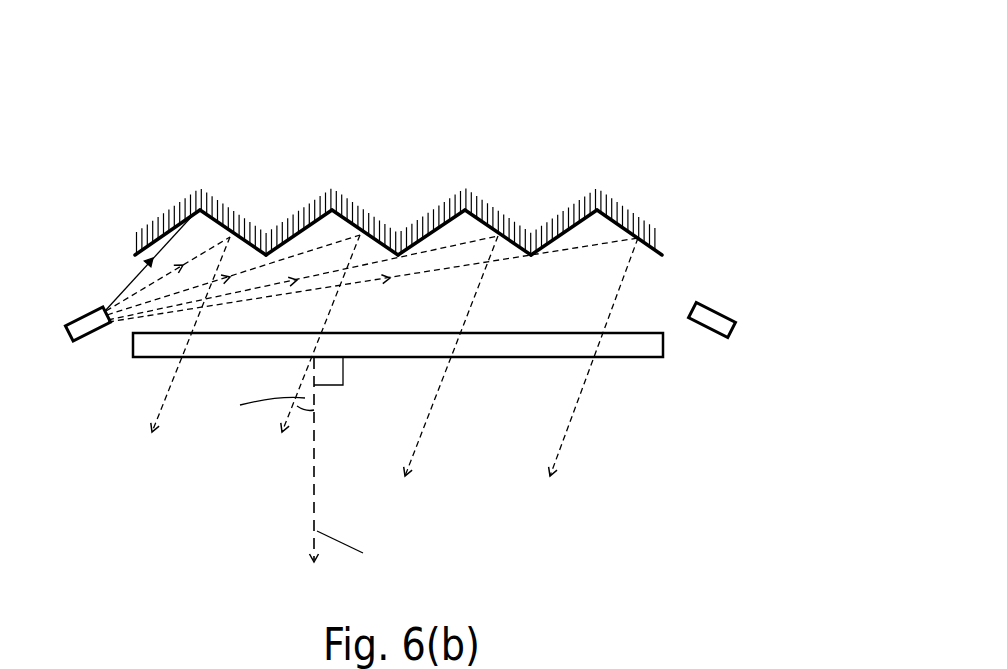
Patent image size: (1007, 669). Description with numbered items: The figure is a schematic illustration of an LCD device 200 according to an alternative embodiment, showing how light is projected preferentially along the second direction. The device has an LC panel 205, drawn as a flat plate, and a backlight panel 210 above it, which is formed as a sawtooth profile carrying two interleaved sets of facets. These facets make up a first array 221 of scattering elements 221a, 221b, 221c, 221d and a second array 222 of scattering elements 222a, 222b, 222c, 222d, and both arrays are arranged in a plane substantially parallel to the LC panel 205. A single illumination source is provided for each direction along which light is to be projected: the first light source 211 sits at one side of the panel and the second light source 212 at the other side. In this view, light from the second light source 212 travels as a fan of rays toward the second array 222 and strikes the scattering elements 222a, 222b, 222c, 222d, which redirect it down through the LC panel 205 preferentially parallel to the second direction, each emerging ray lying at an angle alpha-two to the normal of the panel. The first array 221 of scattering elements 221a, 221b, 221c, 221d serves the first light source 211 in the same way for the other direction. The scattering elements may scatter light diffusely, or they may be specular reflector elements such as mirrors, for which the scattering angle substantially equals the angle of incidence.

The LCD device 200 is at (667, 86).
The LC panel 205 is at (667, 343).
The backlight panel 210 is at (688, 221).
The first light source 211 is at (712, 320).
The second light source 212 is at (80, 321).
The first array of scattering elements 221 is at (141, 174).
The scattering element 221a is at (157, 240).
The scattering element 221b is at (312, 226).
The scattering element 221c is at (447, 222).
The scattering element 221d is at (580, 222).
The second array of scattering elements 222 is at (244, 174).
The scattering element 222a is at (215, 205).
The scattering element 222b is at (355, 226).
The scattering element 222c is at (493, 224).
The scattering element 222d is at (633, 226).